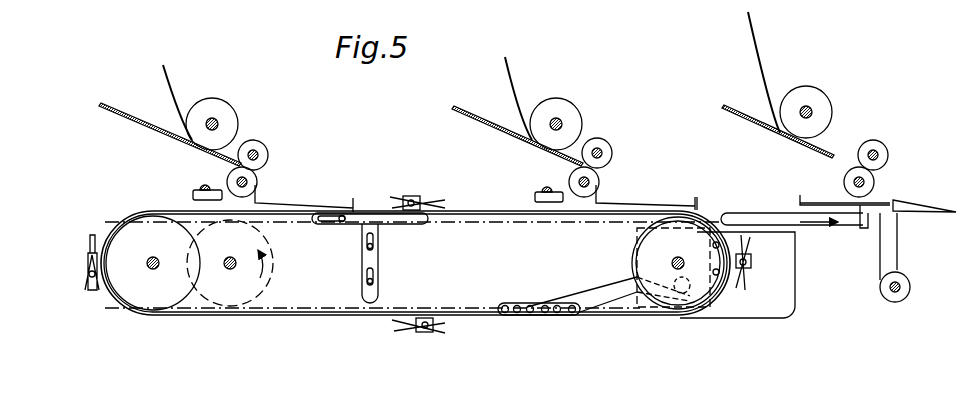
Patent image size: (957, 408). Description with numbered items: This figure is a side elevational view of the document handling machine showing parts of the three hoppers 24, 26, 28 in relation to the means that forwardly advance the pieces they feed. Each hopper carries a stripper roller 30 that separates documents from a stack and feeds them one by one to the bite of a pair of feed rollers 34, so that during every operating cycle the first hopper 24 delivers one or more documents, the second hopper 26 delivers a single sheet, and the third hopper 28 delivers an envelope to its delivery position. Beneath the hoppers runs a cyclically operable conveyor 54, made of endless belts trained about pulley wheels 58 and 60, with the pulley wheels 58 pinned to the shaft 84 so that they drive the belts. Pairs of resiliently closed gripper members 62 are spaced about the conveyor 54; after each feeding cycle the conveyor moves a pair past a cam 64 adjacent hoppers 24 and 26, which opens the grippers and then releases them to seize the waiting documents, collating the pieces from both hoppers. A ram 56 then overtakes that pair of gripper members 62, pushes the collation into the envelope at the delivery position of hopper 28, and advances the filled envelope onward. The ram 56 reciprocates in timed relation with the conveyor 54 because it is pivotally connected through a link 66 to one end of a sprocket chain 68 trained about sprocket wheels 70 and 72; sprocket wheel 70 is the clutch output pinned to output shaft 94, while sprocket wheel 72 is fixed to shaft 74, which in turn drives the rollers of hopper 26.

The hopper 24 is at (260, 123).
The hopper 26 is at (610, 90).
The hopper 28 is at (845, 92).
The stripper roller 30 is at (215, 110).
The feed rollers 34 is at (262, 149).
The conveyor 54 is at (181, 210).
The ram 56 is at (858, 228).
The pulley wheel 58 is at (125, 294).
The pulley wheel 60 is at (632, 257).
The gripper members 62 is at (88, 263).
The cam 64 is at (195, 190).
The connecting bar 66 is at (590, 302).
The sprocket chain 68 is at (513, 304).
The sprocket wheel 70 is at (275, 262).
The sprocket wheel 72 is at (655, 247).
The shaft 74 is at (684, 257).
The shaft 84 is at (158, 257).
The output shaft 94 is at (232, 257).